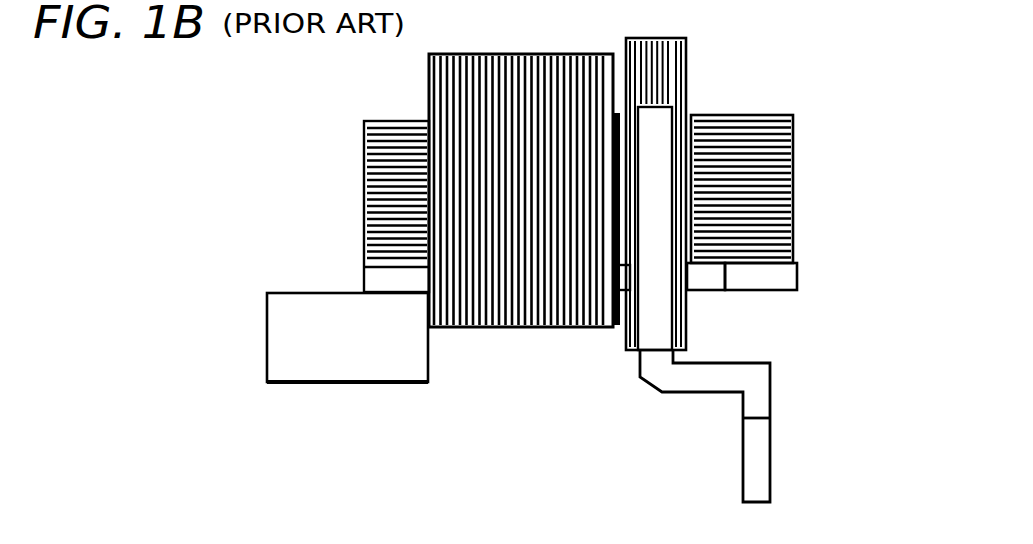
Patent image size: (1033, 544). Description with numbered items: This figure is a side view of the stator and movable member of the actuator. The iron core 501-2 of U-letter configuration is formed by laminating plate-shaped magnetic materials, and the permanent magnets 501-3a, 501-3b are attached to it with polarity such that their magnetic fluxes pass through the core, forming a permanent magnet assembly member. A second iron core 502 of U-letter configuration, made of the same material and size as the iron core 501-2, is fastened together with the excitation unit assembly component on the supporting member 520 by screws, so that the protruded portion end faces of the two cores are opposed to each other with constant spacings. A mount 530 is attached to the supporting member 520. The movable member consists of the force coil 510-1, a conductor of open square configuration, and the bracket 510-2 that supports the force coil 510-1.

The permanent magnet 501-3a is at (430, 89).
The permanent magnet 501-3b is at (431, 213).
The iron core 501-2 is at (364, 203).
The iron core 502 is at (794, 127).
The force coil 510-1 is at (686, 60).
The bracket 510-2 is at (771, 401).
The supporting member 520 is at (798, 283).
The mount 530 is at (267, 333).